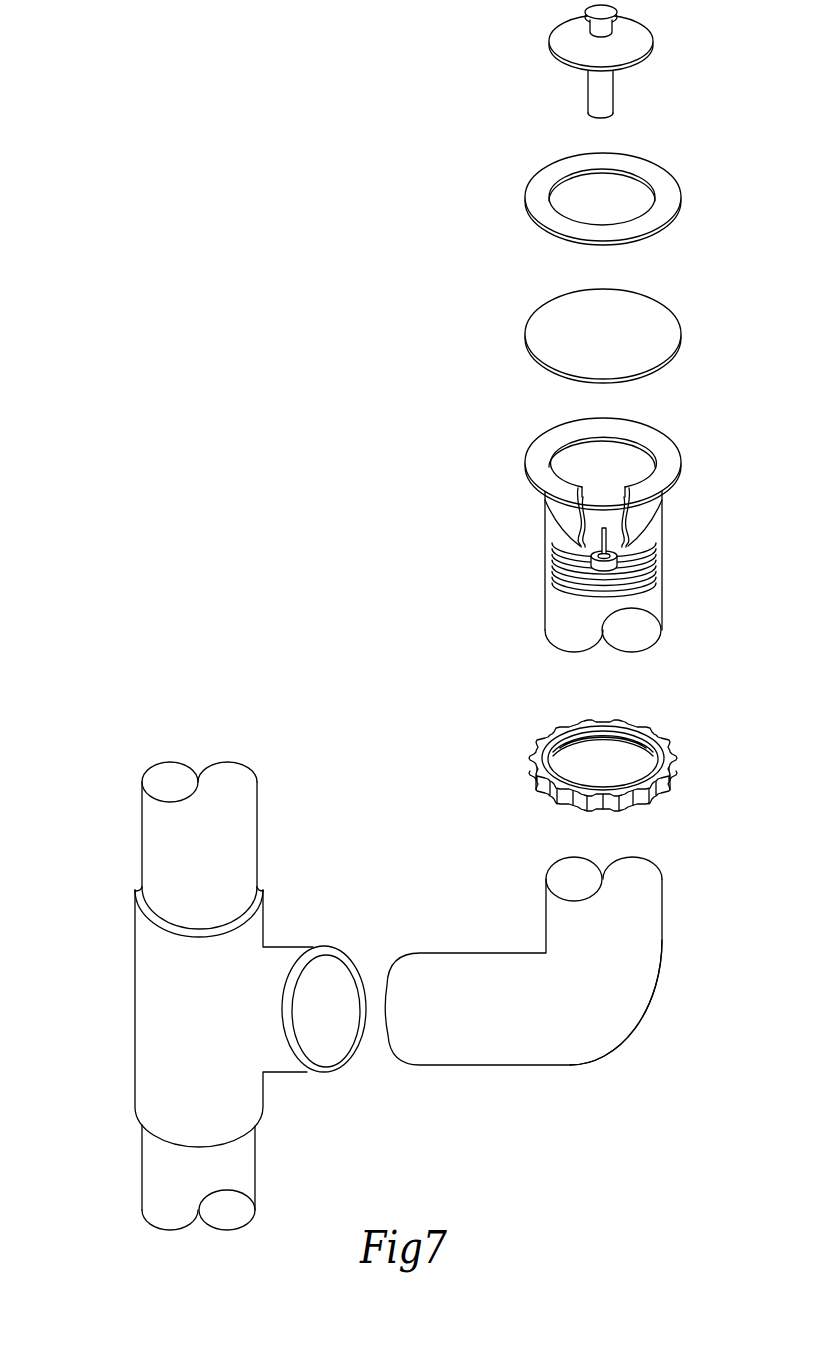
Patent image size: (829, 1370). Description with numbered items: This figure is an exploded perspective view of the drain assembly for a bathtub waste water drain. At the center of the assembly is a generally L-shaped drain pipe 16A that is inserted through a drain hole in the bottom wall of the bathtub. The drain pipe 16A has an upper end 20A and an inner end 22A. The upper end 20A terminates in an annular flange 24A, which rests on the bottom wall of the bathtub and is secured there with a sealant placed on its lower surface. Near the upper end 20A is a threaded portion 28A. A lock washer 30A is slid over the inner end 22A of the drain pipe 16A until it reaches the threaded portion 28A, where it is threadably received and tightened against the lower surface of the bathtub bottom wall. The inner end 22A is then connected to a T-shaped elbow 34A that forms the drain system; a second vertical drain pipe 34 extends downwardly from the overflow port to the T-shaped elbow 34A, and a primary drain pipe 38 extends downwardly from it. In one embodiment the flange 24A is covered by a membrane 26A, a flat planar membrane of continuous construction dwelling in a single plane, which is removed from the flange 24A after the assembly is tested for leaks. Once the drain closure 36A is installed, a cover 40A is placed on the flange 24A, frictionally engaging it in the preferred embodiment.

The drain closure 36A is at (567, 28).
The cover 40A is at (545, 185).
The membrane 26A is at (555, 322).
The upper end 20A is at (605, 502).
The annular flange 24A is at (657, 442).
The threaded portion 28A is at (662, 547).
The drain pipe 16A is at (652, 598).
The lock washer 30A is at (535, 750).
The inner end 22A is at (393, 970).
The second vertical drain pipe 34 is at (238, 807).
The T-shaped elbow 34A is at (135, 1027).
The primary drain pipe 38 is at (245, 1167).